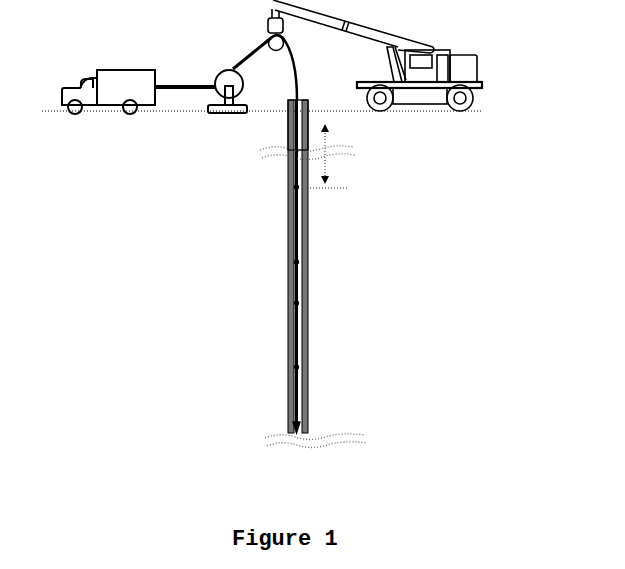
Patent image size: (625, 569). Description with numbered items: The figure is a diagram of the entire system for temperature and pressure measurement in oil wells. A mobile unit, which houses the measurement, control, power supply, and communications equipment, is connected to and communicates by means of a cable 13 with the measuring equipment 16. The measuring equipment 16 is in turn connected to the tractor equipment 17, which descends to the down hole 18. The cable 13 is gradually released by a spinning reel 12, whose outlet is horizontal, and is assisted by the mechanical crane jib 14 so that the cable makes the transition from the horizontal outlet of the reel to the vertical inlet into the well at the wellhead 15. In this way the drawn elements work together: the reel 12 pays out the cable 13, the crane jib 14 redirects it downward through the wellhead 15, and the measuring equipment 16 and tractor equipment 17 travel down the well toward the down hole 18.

The spinning reel 12 is at (218, 100).
The cable 13 is at (282, 100).
The mechanical crane jib 14 is at (268, 30).
The wellhead 15 is at (288, 197).
The measuring equipment 16 is at (302, 262).
The tractor equipment 17 is at (297, 367).
The down hole 18 is at (308, 447).